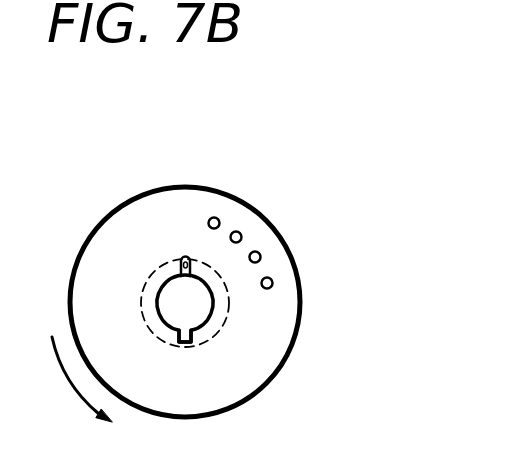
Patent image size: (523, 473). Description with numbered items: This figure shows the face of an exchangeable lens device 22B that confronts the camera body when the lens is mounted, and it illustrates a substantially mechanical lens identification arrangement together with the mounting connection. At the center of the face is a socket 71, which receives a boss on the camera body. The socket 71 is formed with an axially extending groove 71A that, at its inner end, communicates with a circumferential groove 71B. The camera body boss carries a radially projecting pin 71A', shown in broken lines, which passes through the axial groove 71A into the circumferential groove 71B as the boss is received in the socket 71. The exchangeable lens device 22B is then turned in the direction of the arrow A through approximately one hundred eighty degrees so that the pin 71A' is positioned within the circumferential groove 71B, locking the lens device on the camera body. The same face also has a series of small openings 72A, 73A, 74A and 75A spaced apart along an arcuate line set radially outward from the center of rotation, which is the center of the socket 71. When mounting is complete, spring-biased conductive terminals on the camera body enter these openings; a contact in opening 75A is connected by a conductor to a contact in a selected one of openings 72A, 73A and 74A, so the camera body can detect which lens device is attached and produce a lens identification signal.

The exchangeable lens device 22B is at (281, 371).
The socket 71 is at (172, 308).
The axially extending groove 71A is at (218, 361).
The radially projecting pin 71A' is at (155, 247).
The circumferential groove 71B is at (228, 295).
The opening 72A is at (219, 221).
The opening 73A is at (242, 235).
The opening 74A is at (261, 255).
The opening 75A is at (273, 283).
The arrow A is at (66, 378).